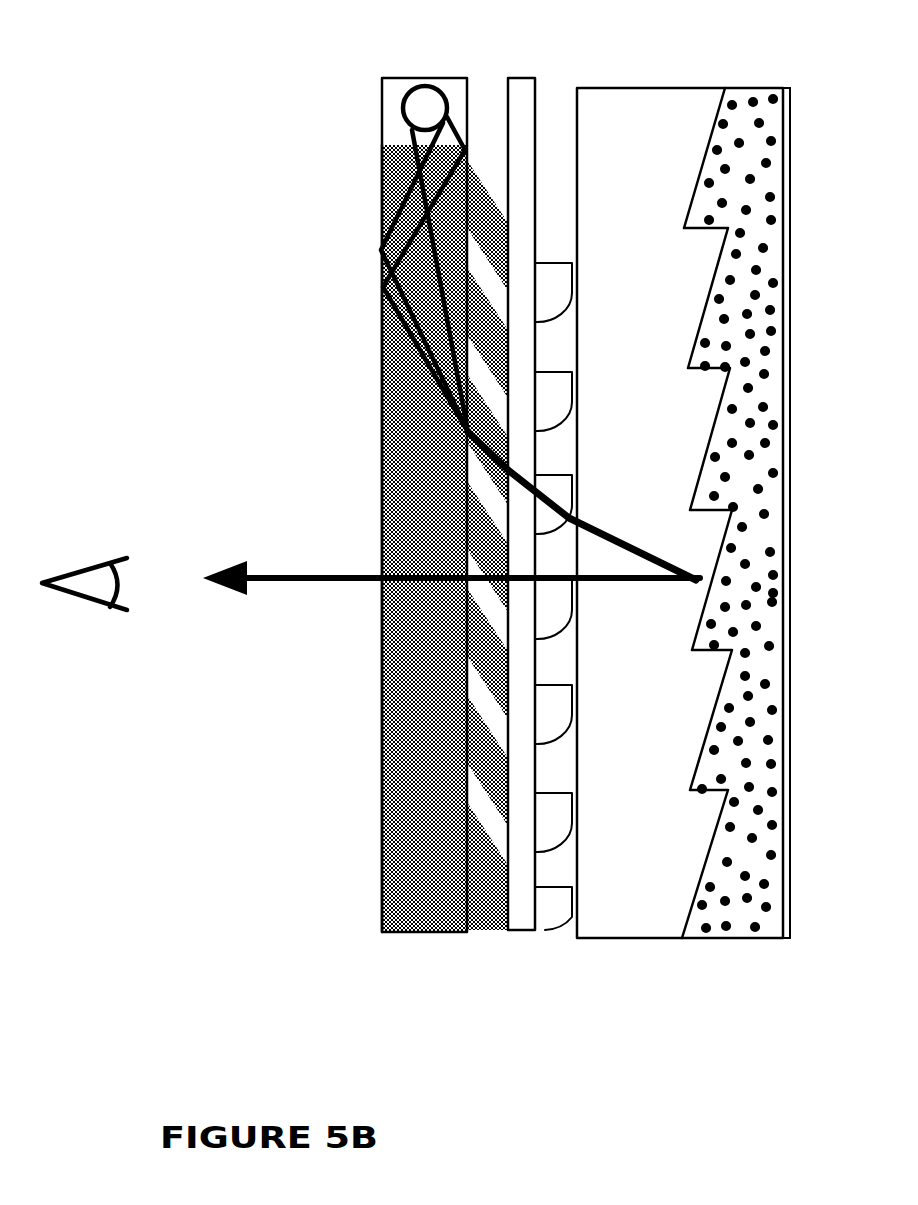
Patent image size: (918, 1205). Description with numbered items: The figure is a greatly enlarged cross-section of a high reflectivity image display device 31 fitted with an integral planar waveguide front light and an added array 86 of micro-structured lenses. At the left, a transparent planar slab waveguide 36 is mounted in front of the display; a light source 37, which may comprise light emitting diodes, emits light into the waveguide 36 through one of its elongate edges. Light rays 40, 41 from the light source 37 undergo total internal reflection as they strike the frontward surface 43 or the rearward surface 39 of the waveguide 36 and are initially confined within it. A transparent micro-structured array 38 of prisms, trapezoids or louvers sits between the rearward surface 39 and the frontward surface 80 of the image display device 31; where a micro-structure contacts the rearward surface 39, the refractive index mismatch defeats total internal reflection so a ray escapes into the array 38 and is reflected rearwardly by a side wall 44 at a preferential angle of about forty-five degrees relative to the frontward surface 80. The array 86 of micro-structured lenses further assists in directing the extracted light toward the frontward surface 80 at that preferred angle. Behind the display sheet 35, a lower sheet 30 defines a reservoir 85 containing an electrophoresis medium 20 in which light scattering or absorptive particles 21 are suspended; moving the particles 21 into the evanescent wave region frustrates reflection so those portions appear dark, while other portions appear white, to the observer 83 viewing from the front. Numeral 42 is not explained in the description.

The electrophoresis medium 20 is at (778, 544).
The light scattering and/or absorptive particles 21 is at (773, 597).
The lower sheet 30 is at (790, 292).
The image display device 31 is at (795, 992).
The sheet 35 is at (726, 551).
The planar slab waveguide 36 is at (378, 522).
The light source 37 is at (428, 100).
The transparent micro-structured array 38 is at (471, 592).
The rearward surface of waveguide 39 is at (467, 785).
The light ray 40 is at (382, 233).
The light ray 41 is at (382, 288).
The front surface of display panel 42 is at (380, 338).
The frontward surface of waveguide 43 is at (380, 690).
The side wall 44 is at (504, 445).
The frontward surface of image display device 80 is at (590, 745).
The observer 83 is at (88, 602).
The reservoir 85 is at (752, 938).
The array of micro-structured lenses 86 is at (555, 930).